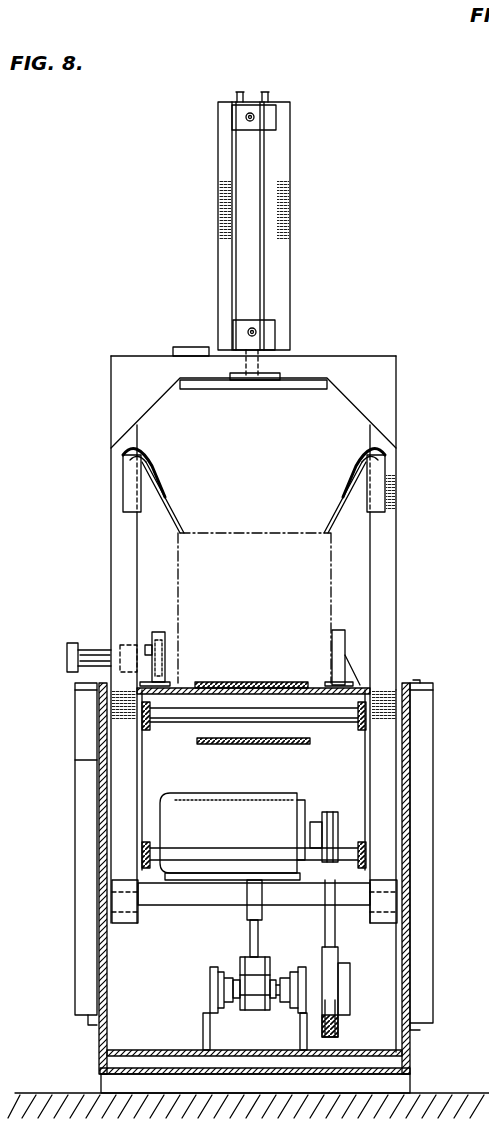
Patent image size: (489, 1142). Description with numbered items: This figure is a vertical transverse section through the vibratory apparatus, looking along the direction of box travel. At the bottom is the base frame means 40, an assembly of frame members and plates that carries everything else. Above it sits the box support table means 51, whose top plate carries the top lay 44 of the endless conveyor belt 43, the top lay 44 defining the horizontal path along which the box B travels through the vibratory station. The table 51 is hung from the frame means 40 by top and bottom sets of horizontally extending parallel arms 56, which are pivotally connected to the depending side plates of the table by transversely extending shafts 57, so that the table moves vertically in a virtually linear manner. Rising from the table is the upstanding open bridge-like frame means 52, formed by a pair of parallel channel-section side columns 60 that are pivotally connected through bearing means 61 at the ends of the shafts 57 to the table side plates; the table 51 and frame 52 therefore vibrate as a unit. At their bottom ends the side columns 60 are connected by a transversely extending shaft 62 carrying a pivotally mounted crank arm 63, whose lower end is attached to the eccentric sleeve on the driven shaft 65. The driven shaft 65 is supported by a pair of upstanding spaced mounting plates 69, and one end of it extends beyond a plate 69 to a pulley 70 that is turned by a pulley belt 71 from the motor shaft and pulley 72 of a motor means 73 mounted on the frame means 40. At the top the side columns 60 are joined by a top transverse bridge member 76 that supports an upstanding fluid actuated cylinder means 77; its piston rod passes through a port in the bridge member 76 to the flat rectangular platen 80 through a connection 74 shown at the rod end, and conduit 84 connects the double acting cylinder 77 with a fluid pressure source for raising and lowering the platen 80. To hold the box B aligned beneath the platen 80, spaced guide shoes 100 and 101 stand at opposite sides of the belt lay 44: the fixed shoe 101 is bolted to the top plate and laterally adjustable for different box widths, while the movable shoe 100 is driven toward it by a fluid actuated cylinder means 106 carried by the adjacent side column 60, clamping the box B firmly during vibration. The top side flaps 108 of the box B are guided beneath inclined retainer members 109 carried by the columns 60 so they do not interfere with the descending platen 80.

The base frame means 40 is at (74, 757).
The endless conveyor belt 43 is at (272, 745).
The top lay 44 is at (225, 682).
The box support table means 51 is at (372, 690).
The upstanding open bridge-like frame means 52 is at (400, 493).
The parallel arms 56 is at (152, 720).
The shafts 57 is at (315, 722).
The side columns 60 is at (111, 553).
The bearing means 61 is at (370, 730).
The transversely extending shaft 62 is at (358, 908).
The crank arm 63 is at (262, 946).
The driven shaft 65 is at (208, 985).
The mounting plates 69 is at (203, 1035).
The pulley 70 is at (345, 1025).
The pulley belt 71 is at (338, 935).
The motor shaft and pulley 72 is at (330, 815).
The motor means 73 is at (192, 805).
The coupling 74 is at (265, 370).
The top transverse bridge member 76 is at (355, 378).
The fluid actuated cylinder means 77 is at (290, 190).
The platen 80 is at (283, 388).
The conduit 84 is at (255, 117).
The movable guide shoe 100 is at (152, 636).
The fixed guide shoe 101 is at (345, 642).
The fluid actuated cylinder means 106 is at (70, 660).
The top side flaps 108 is at (162, 527).
The inclined retainer members 109 is at (128, 460).
The box B is at (180, 590).